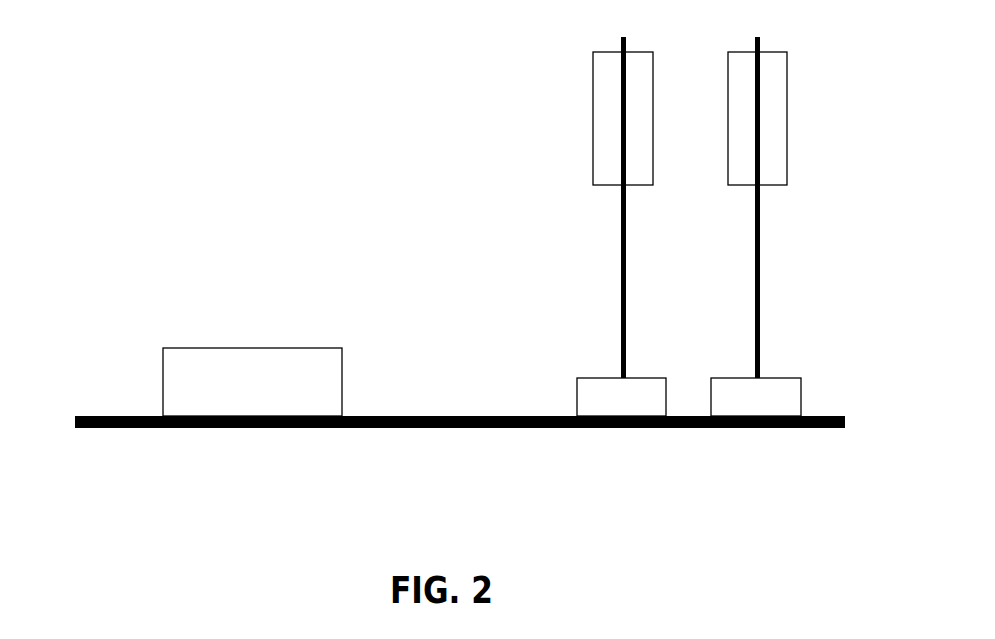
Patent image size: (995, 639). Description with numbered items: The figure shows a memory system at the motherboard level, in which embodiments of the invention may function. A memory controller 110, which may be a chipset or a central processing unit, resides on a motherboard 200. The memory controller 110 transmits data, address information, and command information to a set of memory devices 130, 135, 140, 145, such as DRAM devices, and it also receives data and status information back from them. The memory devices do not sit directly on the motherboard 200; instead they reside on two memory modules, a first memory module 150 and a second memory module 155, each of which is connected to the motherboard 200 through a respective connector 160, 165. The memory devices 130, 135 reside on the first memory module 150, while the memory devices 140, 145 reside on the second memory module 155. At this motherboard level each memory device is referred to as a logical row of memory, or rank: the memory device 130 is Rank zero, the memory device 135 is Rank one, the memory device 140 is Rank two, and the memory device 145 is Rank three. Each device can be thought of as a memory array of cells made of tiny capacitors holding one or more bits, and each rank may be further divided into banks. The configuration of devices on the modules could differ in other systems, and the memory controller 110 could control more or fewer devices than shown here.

The memory controller 110 is at (163, 375).
The memory device 130 is at (593, 62).
The memory device 135 is at (655, 65).
The memory device 140 is at (740, 187).
The memory device 145 is at (788, 62).
The first memory module 150 is at (626, 345).
The second memory module 155 is at (760, 345).
The connector 160 is at (577, 393).
The connector 165 is at (801, 410).
The motherboard 200 is at (98, 428).